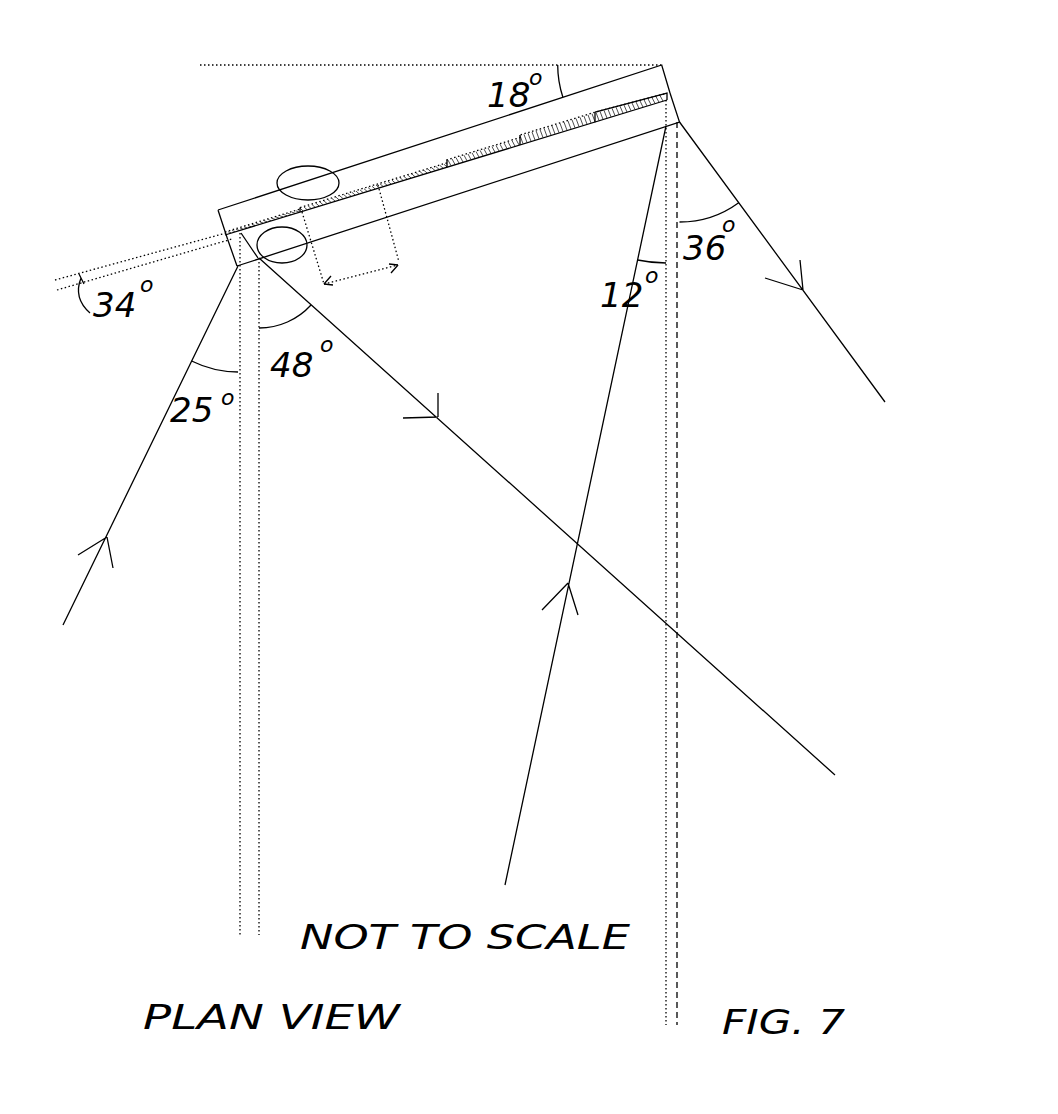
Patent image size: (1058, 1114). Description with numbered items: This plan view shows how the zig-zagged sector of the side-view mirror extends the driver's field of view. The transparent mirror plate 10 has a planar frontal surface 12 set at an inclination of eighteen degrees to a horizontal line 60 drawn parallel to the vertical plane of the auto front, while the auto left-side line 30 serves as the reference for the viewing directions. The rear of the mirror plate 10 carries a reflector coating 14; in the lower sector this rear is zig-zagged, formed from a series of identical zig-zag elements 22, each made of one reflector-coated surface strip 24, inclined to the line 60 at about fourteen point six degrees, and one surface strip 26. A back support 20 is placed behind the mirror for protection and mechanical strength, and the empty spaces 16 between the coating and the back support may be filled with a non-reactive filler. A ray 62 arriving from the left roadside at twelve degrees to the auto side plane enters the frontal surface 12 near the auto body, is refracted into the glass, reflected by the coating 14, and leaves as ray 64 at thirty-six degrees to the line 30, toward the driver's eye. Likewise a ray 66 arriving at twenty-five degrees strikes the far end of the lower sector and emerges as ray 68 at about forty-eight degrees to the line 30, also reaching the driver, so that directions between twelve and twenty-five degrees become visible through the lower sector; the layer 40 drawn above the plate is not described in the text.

The transparent mirror plate 10 is at (454, 179).
The planar frontal surface 12 is at (580, 150).
The reflector coating 14 is at (515, 147).
The empty spaces 16 is at (440, 163).
The back support 20 is at (197, 228).
The zig-zag element 22 is at (350, 235).
The reflector-coated surface strips 24 is at (412, 178).
The surface strips 26 is at (447, 168).
The auto left-side line 30 is at (680, 382).
The transparent cover layer 40 is at (363, 160).
The horizontal line 60 is at (403, 65).
The ray 62 is at (553, 653).
The ray 64 is at (842, 347).
The ray 66 is at (138, 478).
The ray 68 is at (547, 516).